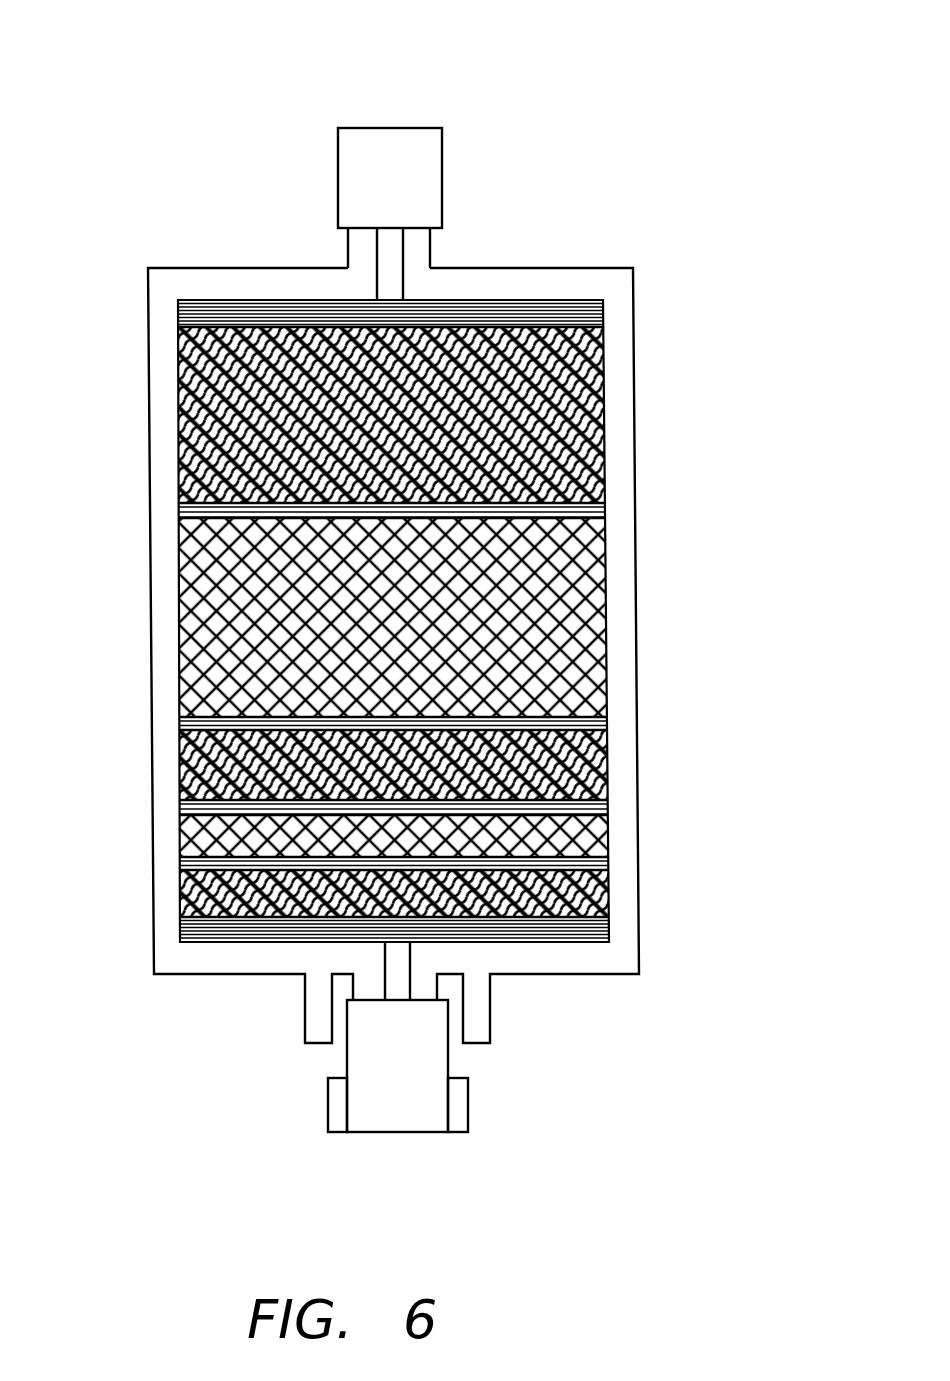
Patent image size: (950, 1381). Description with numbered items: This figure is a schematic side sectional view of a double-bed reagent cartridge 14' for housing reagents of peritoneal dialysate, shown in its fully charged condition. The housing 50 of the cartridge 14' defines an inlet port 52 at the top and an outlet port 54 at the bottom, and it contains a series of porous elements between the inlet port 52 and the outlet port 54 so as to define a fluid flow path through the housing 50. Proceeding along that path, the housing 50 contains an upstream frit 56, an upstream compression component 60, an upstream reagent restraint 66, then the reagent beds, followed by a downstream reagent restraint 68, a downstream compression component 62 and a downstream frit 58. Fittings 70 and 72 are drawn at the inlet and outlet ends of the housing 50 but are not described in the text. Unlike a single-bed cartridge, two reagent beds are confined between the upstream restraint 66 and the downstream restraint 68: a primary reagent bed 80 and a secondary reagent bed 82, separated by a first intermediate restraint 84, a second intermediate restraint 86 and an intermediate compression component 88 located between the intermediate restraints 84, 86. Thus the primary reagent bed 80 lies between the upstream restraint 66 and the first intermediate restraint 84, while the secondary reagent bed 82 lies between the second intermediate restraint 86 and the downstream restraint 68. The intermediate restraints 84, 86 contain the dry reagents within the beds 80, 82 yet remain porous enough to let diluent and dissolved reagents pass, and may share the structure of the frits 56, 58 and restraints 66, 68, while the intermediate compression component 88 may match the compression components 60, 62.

The double-bed reagent cartridge 14' is at (407, 570).
The housing 50 is at (630, 528).
The inlet port 52 is at (392, 263).
The outlet port 54 is at (393, 977).
The upstream frit 56 is at (218, 302).
The downstream frit 58 is at (608, 935).
The upstream compression component 60 is at (188, 380).
The downstream compression component 62 is at (608, 888).
The upstream reagent restraint 66 is at (182, 510).
The downstream reagent restraint 68 is at (608, 862).
The upper terminal 70 is at (360, 168).
The lower terminal 72 is at (410, 1062).
The primary reagent bed 80 is at (188, 576).
The secondary reagent bed 82 is at (182, 838).
The first intermediate restraint 84 is at (182, 720).
The second intermediate restraint 86 is at (182, 805).
The intermediate compression component 88 is at (182, 760).